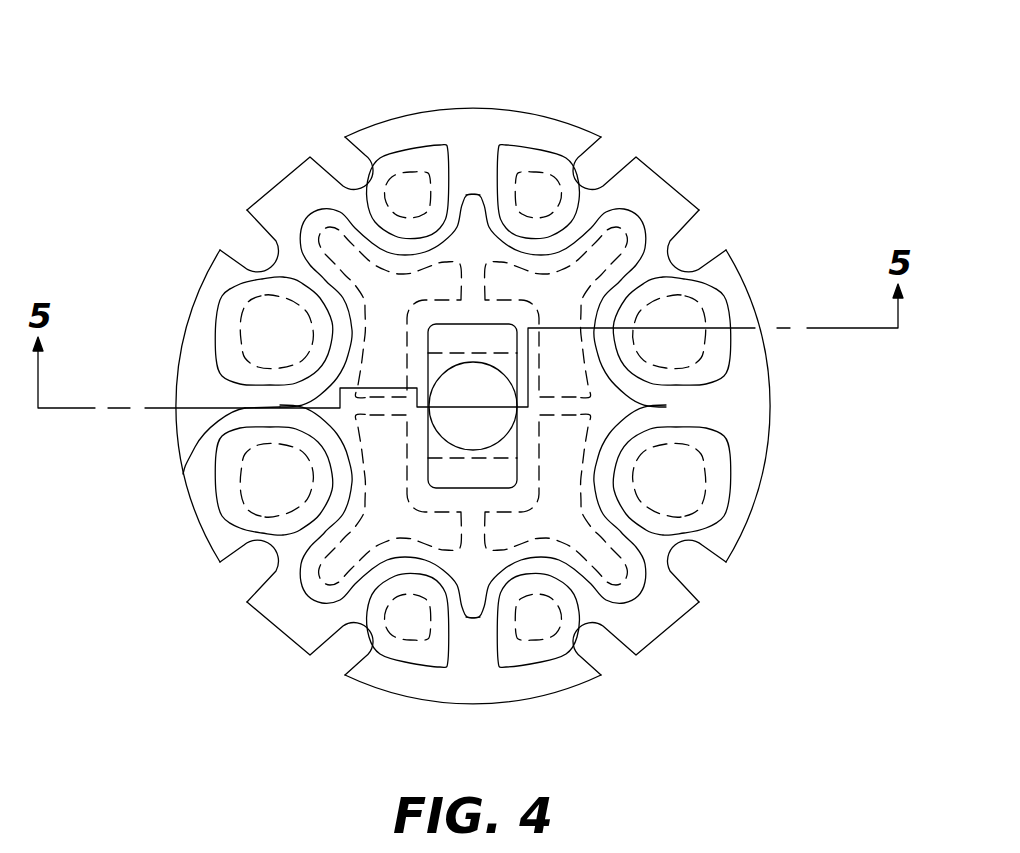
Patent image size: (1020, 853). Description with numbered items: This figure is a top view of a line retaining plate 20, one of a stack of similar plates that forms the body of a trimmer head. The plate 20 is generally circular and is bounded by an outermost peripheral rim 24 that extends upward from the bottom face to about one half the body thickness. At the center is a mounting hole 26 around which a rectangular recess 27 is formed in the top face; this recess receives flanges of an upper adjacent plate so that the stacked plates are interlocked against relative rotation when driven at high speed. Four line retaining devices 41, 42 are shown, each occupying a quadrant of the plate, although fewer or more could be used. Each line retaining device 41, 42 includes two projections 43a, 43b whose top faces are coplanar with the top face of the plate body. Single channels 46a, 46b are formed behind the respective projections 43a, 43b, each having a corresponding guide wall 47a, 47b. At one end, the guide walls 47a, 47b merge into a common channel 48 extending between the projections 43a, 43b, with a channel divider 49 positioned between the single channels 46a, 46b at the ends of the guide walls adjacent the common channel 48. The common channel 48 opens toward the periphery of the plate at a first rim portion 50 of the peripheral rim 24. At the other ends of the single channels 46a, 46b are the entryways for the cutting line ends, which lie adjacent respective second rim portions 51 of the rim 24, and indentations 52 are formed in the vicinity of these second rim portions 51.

The plate 20 is at (688, 182).
The outermost peripheral rim 24 is at (736, 272).
The center mounting hole 26 is at (459, 396).
The rectangular recess 27 is at (441, 337).
The line retaining device 41 is at (775, 411).
The line retaining device 42 is at (481, 105).
The projection 43a is at (265, 322).
The projection 43b is at (262, 490).
The single channel 46a is at (292, 240).
The single channel 46b is at (300, 555).
The guide wall 47a is at (303, 358).
The guide wall 47b is at (257, 510).
The common channel 48 is at (205, 447).
The channel divider 49 is at (203, 415).
The first rim portion 50 is at (175, 356).
The second rim portion 51 is at (248, 205).
The indentation 52 is at (236, 245).